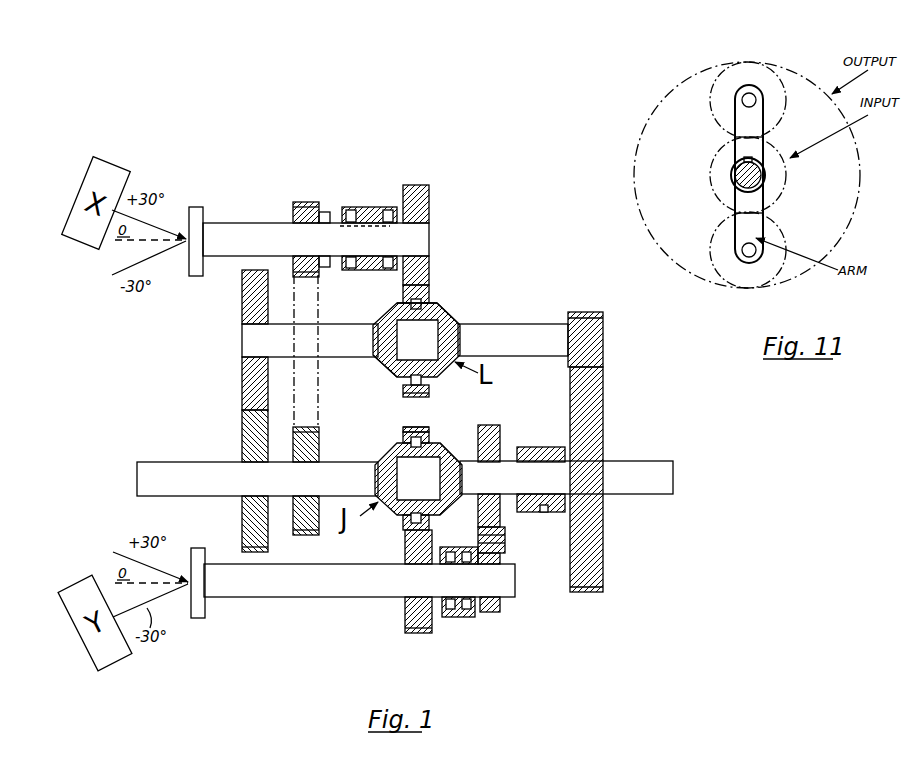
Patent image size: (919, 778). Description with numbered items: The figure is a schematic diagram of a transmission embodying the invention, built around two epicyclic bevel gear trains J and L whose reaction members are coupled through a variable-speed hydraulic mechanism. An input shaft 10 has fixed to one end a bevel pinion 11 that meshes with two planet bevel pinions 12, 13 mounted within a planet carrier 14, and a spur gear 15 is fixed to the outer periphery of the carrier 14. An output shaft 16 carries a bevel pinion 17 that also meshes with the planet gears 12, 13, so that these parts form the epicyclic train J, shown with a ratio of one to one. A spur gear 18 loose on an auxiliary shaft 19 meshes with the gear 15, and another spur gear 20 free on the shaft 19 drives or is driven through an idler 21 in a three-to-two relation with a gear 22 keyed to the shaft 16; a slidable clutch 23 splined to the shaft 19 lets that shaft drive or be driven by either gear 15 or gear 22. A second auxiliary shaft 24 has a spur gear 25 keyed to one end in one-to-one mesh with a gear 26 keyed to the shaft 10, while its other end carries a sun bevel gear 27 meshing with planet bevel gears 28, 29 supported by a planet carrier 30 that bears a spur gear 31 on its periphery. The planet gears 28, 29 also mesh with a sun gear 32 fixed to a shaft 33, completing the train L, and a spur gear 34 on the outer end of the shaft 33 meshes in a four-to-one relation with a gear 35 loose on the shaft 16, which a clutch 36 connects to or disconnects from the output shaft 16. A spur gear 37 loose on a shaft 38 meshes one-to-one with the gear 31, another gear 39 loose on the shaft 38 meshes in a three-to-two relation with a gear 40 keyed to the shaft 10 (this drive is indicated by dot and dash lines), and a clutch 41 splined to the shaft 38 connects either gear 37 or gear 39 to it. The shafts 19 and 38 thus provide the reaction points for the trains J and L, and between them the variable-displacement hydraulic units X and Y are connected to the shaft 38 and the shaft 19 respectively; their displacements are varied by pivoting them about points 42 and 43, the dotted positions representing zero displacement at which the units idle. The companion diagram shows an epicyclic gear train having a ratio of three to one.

The input shaft 10 is at (172, 470).
The bevel pinion 11 is at (381, 466).
The planet bevel pinion 12 is at (403, 441).
The planet bevel pinion 13 is at (403, 520).
The planet carrier 14 is at (411, 440).
The spur gear 15 is at (426, 442).
The output shaft 16 is at (651, 470).
The bevel pinion 17 is at (455, 472).
The spur gear 18 is at (408, 556).
The auxiliary shaft 19 is at (338, 575).
The spur gear 20 is at (500, 610).
The idler 21 is at (507, 544).
The gear 22 is at (503, 518).
The slidable clutch 23 is at (460, 618).
The auxiliary shaft 24 is at (342, 362).
The spur gear 25 is at (262, 365).
The gear 26 is at (265, 450).
The sun bevel gear 27 is at (380, 323).
The planet bevel gear 28 is at (395, 306).
The planet bevel gear 29 is at (395, 375).
The planet carrier 30 is at (421, 380).
The spur gear 31 is at (427, 396).
The sun gear 32 is at (452, 318).
The shaft 33 is at (512, 352).
The spur gear 34 is at (603, 355).
The gear 35 is at (603, 393).
The clutch 36 is at (538, 447).
The spur gear 37 is at (429, 262).
The shaft 38 is at (429, 240).
The gear 39 is at (293, 215).
The gear 40 is at (316, 447).
The clutch 41 is at (380, 207).
The pivot point 42 is at (190, 244).
The pivot point 43 is at (190, 588).